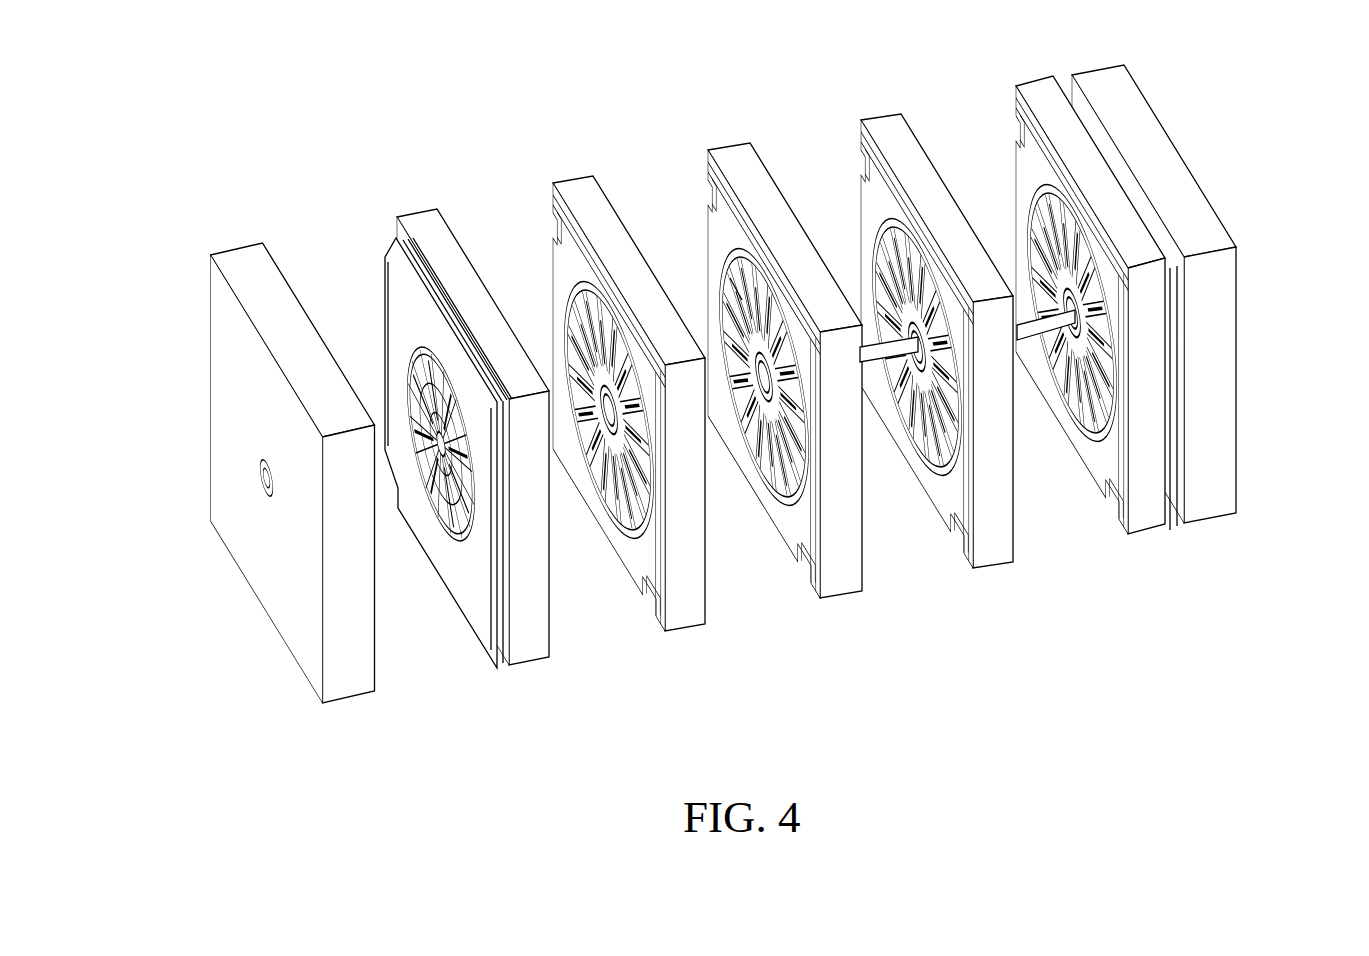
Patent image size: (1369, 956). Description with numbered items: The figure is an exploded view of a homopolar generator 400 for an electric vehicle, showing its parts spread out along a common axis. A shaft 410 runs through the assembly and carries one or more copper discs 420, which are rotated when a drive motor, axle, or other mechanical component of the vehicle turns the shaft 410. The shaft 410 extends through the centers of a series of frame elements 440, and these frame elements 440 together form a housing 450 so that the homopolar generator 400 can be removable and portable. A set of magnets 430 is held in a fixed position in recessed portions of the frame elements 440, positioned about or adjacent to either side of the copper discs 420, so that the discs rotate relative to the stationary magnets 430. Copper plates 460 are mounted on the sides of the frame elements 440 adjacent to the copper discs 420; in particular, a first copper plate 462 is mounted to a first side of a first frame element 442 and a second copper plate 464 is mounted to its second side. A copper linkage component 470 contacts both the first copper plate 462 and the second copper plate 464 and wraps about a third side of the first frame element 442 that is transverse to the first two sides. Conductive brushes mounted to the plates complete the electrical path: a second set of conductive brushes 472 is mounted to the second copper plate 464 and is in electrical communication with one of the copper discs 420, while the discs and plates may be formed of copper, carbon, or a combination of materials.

The homopolar generator 400 is at (205, 122).
The shaft 410 is at (967, 192).
The copper discs 420 is at (1103, 276).
The set of magnets 430 is at (808, 430).
The frame elements 440 is at (742, 384).
The first frame element 442 is at (473, 412).
The housing 450 is at (1277, 559).
The copper plates 460 is at (879, 360).
The first copper plate 462 is at (454, 436).
The second copper plate 464 is at (502, 371).
The copper linkage component 470 is at (487, 304).
The second set of conductive brushes 472 is at (670, 175).